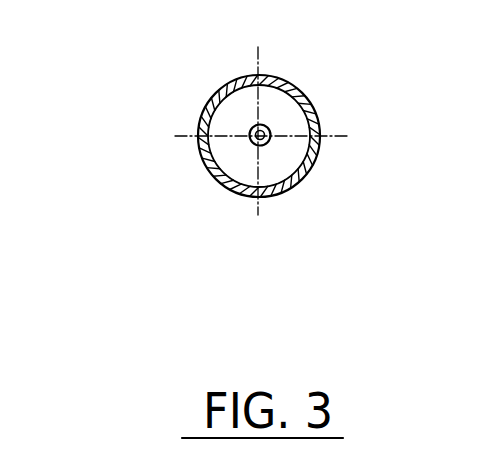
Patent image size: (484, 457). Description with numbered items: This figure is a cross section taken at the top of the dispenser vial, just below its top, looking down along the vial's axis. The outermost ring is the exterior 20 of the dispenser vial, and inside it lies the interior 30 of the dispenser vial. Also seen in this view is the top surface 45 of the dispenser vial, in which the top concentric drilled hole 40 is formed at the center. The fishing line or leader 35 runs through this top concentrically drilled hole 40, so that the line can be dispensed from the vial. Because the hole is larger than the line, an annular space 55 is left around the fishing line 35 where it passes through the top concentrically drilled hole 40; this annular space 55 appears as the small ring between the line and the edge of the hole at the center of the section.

The exterior of the dispenser vial 20 is at (250, 197).
The interior of the dispenser vial 30 is at (202, 122).
The top surface of the dispenser vial 45 is at (233, 110).
The fishing line or leader 35 is at (270, 120).
The top concentric drilled hole 40 is at (252, 143).
The annular space 55 is at (268, 144).